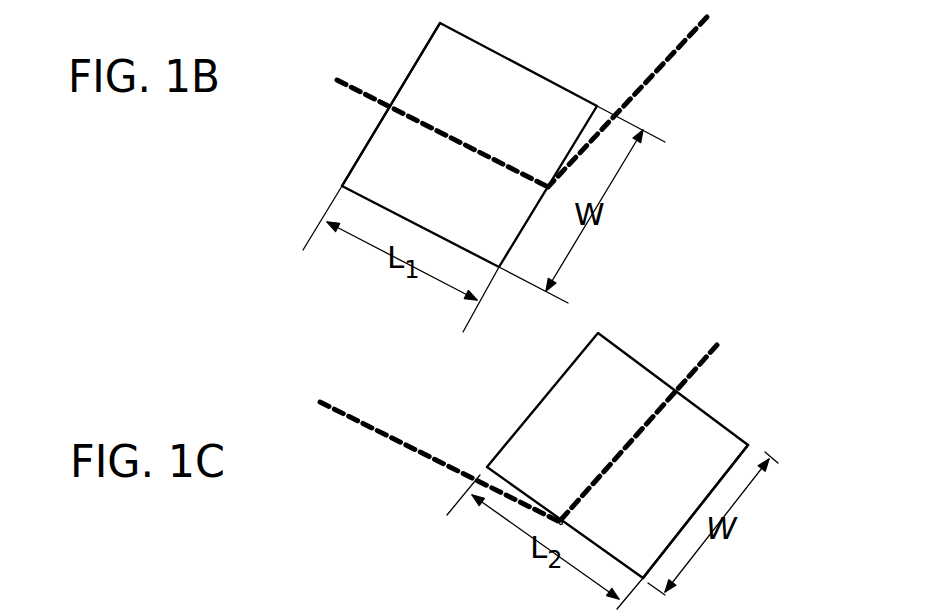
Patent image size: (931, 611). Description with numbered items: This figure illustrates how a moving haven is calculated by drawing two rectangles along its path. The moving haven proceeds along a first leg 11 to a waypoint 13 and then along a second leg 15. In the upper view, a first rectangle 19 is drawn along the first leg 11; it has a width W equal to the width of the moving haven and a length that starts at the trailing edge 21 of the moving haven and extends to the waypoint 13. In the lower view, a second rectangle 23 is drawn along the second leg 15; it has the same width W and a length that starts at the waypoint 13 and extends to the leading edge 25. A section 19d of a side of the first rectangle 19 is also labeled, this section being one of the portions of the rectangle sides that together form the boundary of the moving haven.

In FIG. 1B, the first leg 11 is at (362, 95).
In FIG. 1C, the first leg 11 is at (407, 448).
In FIG. 1B, the waypoint 13 is at (547, 188).
In FIG. 1C, the waypoint 13 is at (560, 523).
In FIG. 1B, the second leg 15 is at (665, 62).
In FIG. 1C, the second leg 15 is at (703, 363).
In FIG. 1B, the first rectangle 19 is at (508, 72).
In FIG. 1C, the section of side of first rectangle 19d is at (595, 472).
In FIG. 1B, the trailing edge 21 is at (425, 50).
In FIG. 1C, the second rectangle 23 is at (697, 468).
In FIG. 1C, the leading edge 25 is at (743, 432).